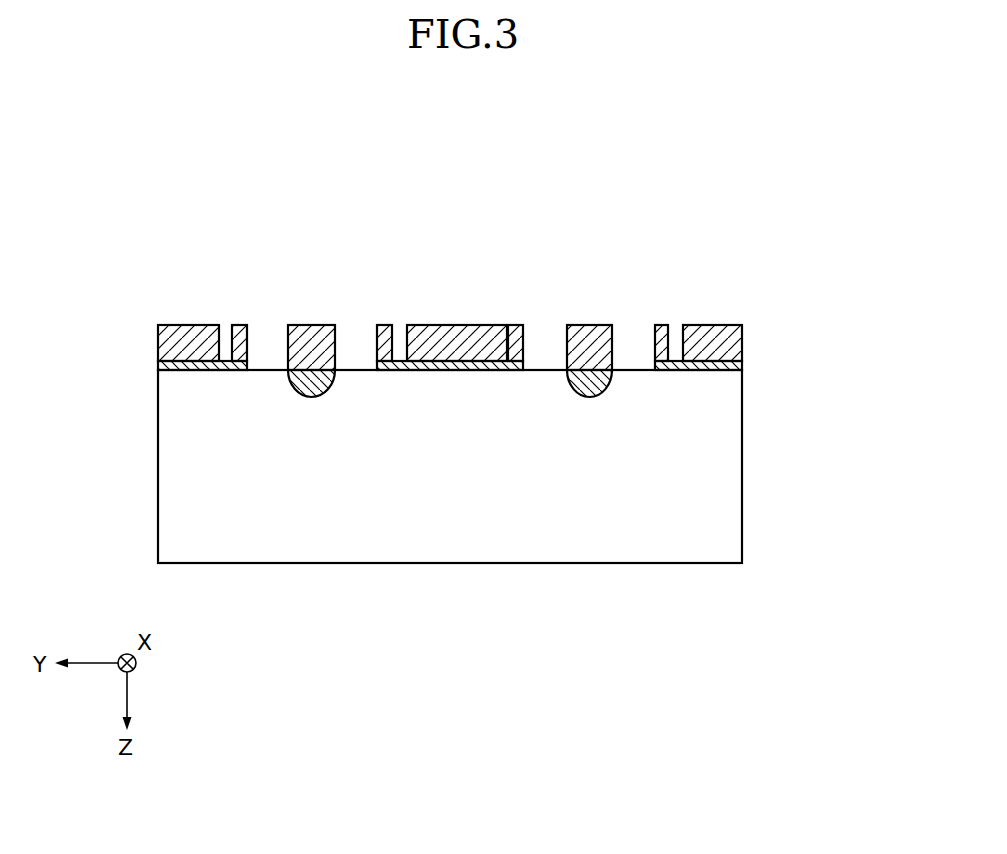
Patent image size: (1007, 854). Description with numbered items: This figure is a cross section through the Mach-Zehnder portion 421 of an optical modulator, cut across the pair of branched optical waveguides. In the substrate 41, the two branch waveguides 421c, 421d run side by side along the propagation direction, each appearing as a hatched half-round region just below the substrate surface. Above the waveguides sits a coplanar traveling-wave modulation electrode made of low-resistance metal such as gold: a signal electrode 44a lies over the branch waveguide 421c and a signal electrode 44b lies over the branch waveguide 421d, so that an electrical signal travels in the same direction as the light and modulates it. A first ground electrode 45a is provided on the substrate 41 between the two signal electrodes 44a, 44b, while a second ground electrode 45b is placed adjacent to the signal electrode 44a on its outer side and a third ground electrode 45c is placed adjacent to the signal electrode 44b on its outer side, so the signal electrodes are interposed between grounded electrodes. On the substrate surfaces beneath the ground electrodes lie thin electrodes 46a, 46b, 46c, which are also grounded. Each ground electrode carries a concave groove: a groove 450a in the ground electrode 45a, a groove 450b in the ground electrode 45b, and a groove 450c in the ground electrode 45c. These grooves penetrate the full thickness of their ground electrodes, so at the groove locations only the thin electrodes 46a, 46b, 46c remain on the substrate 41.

The Mach-Zehnder portion 421 is at (798, 186).
The substrate 41 is at (722, 470).
The branch waveguide 421c is at (607, 388).
The branch waveguide 421d is at (330, 390).
The signal electrode 44a is at (600, 340).
The signal electrode 44b is at (327, 342).
The ground electrode 45a is at (532, 342).
The ground electrode 45b is at (787, 342).
The ground electrode 45c is at (255, 345).
The thin electrode 46a is at (449, 355).
The thin electrode 46b is at (716, 352).
The thin electrode 46c is at (190, 363).
The groove 450a is at (503, 338).
The groove 450b is at (676, 338).
The groove 450c is at (224, 340).